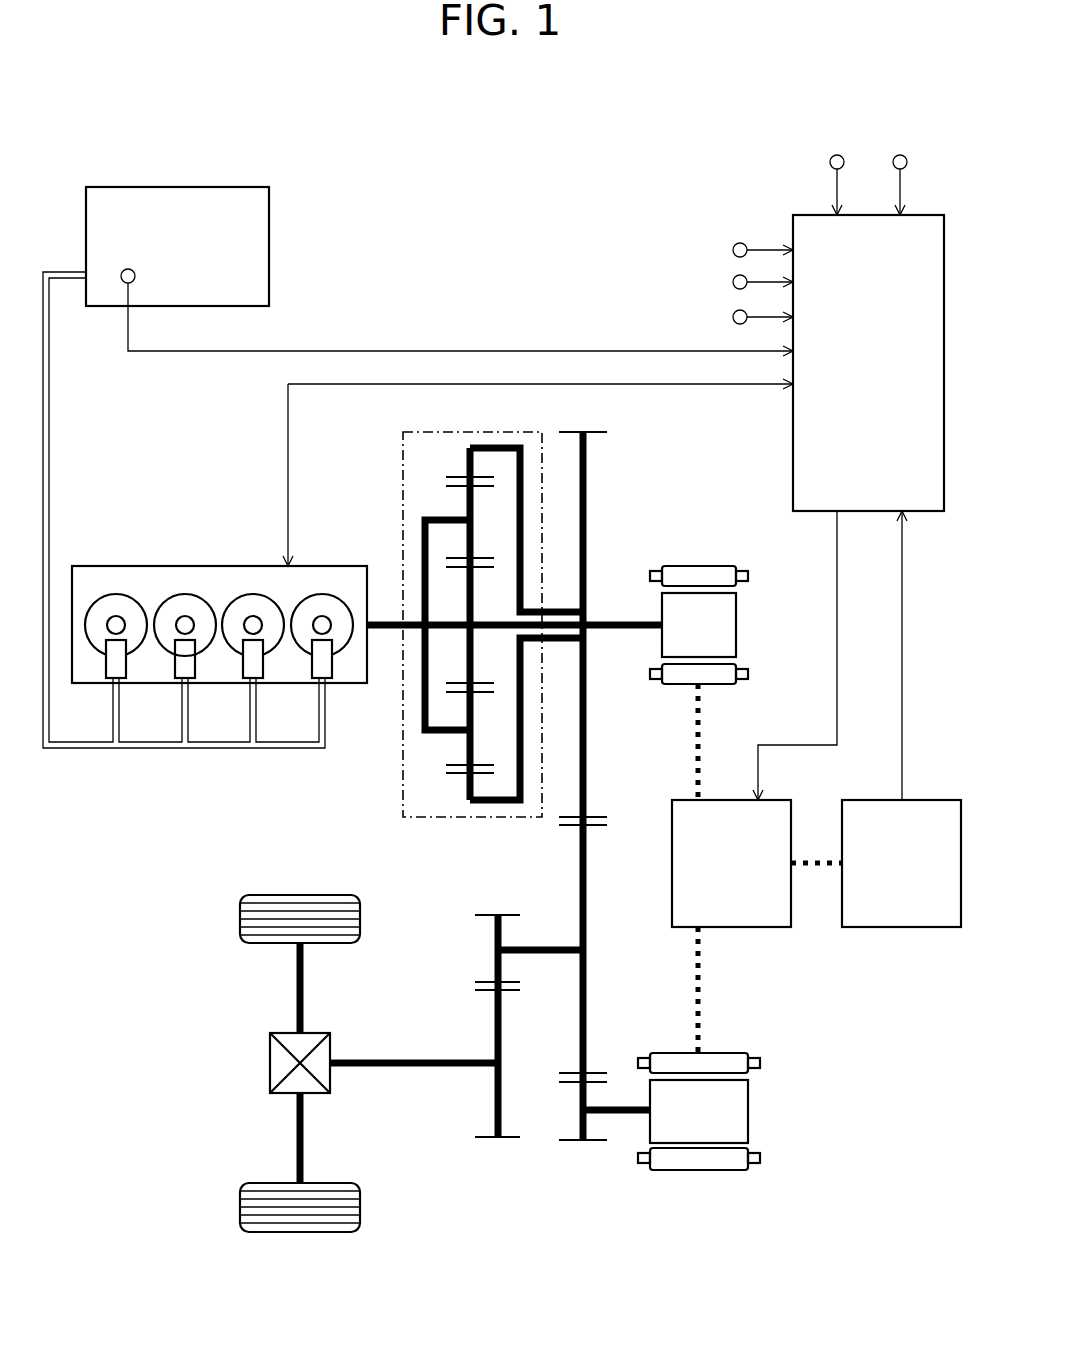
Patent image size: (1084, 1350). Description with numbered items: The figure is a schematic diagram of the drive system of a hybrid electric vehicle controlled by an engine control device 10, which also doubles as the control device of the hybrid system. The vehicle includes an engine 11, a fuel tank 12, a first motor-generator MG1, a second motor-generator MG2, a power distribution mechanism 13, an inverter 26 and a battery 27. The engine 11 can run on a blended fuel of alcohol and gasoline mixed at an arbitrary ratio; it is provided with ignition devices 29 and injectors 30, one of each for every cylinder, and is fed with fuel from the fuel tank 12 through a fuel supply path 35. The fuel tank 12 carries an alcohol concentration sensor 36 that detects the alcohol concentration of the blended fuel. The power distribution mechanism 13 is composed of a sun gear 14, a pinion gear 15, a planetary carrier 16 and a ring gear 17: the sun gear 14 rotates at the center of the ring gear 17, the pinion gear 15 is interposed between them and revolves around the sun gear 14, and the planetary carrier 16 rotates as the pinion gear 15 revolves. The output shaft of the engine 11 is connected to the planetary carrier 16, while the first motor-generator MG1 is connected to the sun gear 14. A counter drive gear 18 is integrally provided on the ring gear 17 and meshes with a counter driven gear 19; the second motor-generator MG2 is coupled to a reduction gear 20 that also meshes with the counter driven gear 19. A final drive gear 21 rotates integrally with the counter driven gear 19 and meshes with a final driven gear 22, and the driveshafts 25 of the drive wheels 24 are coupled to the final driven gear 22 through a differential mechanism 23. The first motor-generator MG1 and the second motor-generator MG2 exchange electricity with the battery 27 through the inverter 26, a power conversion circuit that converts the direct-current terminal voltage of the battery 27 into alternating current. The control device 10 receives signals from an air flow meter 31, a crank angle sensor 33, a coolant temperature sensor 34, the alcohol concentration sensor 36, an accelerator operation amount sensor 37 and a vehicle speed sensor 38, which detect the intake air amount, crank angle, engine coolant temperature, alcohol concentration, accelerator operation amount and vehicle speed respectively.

The engine control device 10 is at (793, 464).
The engine 11 is at (115, 566).
The fuel tank 12 is at (269, 245).
The power distribution mechanism 13 is at (403, 482).
The sun gear 14 is at (467, 650).
The pinion gear 15 is at (474, 498).
The planetary carrier 16 is at (443, 519).
The ring gear 17 is at (466, 790).
The counter drive gear 18 is at (588, 790).
The counter driven gear 19 is at (592, 828).
The reduction gear 20 is at (578, 1098).
The final drive gear 21 is at (494, 932).
The final driven gear 22 is at (494, 1001).
The differential mechanism 23 is at (270, 1061).
The drive wheel 24 is at (240, 914).
The driveshaft 25 is at (304, 985).
The inverter 26 is at (672, 899).
The battery 27 is at (890, 927).
The ignition device 29 is at (185, 616).
The injector 30 is at (333, 665).
The air flow meter 31 is at (733, 249).
The crank angle sensor 33 is at (733, 281).
The coolant temperature sensor 34 is at (733, 316).
The fuel supply path 35 is at (52, 440).
The alcohol concentration sensor 36 is at (128, 269).
The accelerator operation amount sensor 37 is at (837, 155).
The vehicle speed sensor 38 is at (900, 155).
The first motor-generator MG1 is at (738, 622).
The second motor-generator MG2 is at (750, 1110).